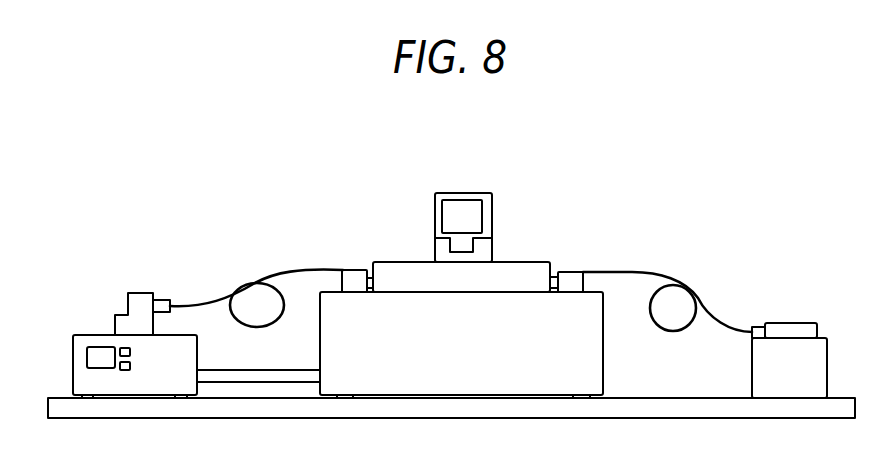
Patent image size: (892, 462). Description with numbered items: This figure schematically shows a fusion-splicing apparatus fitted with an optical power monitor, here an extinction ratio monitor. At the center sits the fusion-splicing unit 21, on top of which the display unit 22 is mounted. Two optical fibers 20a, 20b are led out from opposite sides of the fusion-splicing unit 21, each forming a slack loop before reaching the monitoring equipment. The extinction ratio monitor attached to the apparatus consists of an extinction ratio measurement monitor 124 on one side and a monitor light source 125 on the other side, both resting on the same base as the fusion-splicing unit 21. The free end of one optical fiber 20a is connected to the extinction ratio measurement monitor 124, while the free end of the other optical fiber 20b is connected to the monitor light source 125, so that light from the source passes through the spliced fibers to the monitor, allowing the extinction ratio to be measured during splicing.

The extinction ratio measurement monitor 124 is at (86, 311).
The optical fiber 20a is at (278, 273).
The fusion-splicing unit 21 is at (528, 216).
The display unit 22 is at (460, 193).
The optical fiber 20b is at (637, 273).
The monitor light source 125 is at (797, 318).